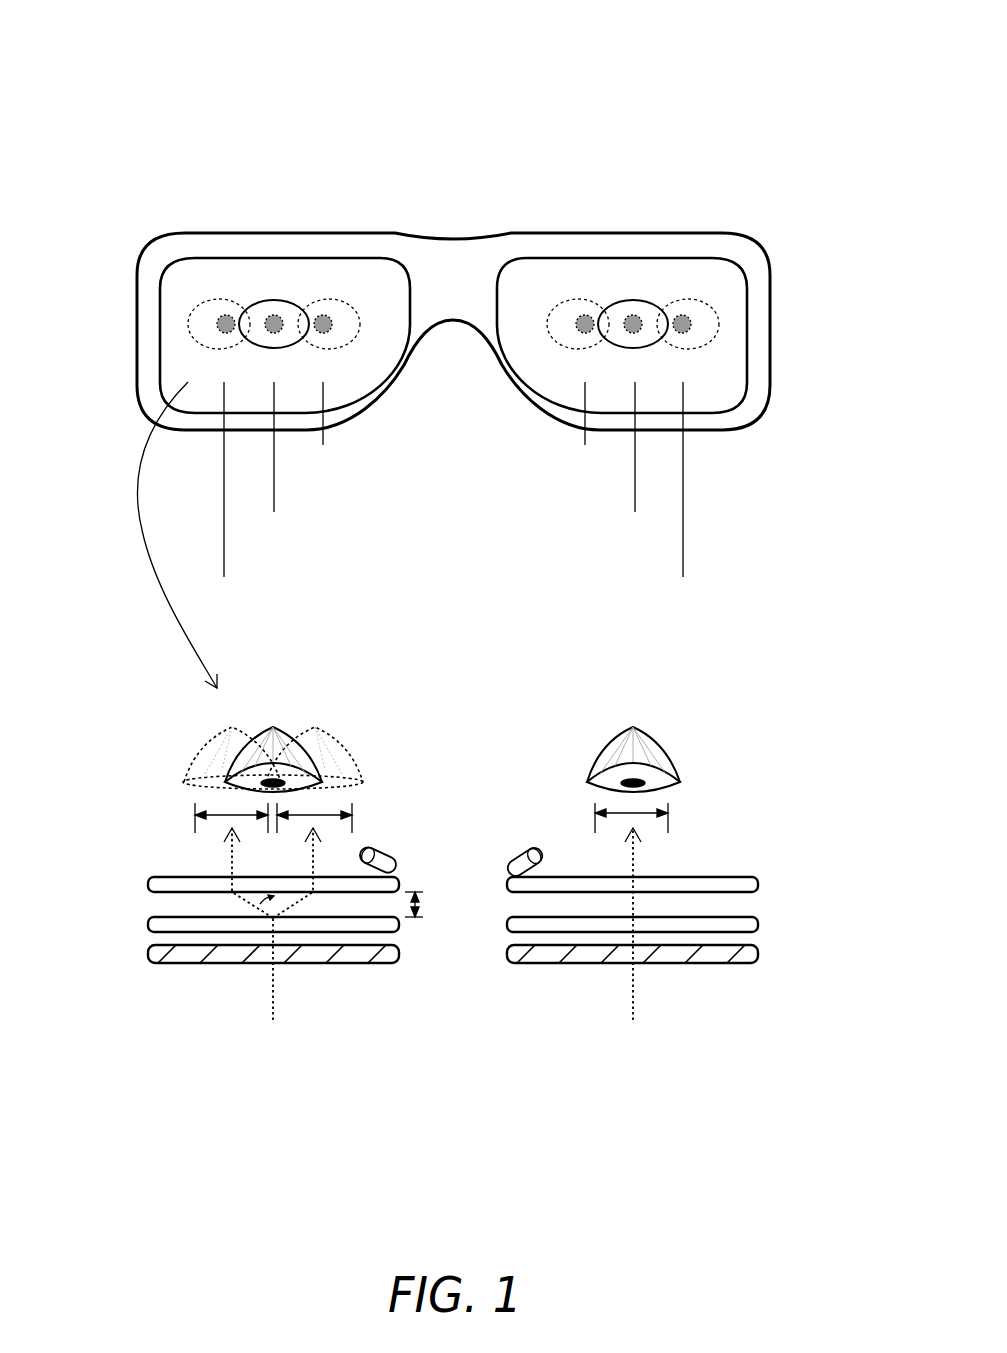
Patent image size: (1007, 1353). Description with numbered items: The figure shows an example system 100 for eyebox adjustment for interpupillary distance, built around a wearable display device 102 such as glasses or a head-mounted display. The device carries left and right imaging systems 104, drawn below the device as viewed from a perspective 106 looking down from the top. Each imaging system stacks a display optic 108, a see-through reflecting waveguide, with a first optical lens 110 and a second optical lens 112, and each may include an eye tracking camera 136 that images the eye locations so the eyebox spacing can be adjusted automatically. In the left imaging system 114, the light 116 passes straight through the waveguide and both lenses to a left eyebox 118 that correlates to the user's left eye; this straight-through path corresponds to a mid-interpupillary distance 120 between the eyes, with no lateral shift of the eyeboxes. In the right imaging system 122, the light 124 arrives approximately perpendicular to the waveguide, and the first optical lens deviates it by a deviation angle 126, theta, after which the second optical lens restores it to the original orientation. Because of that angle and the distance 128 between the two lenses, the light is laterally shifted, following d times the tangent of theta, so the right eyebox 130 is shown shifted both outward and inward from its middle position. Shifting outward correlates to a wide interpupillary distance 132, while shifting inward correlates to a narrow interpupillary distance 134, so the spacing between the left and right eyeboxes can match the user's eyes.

The system 100 is at (748, 57).
The wearable display device 102 is at (520, 172).
The imaging systems 104 is at (519, 700).
The perspective 106 is at (273, 212).
The display optic 108 is at (352, 963).
The first optical lens 110 is at (155, 917).
The second optical lens 112 is at (155, 877).
The left imaging system 114 is at (699, 1037).
The light 116 is at (653, 1052).
The left eyebox 118 is at (721, 827).
The mid-interpupillary distance 120 is at (635, 512).
The right imaging system 122 is at (336, 1035).
The light 124 is at (293, 1052).
The deviation angle 126 is at (234, 914).
The distance 128 is at (422, 918).
The right eyebox 130 is at (403, 826).
The wide interpupillary distance 132 is at (683, 577).
The narrow interpupillary distance 134 is at (585, 445).
The eye tracking camera 136 is at (517, 860).